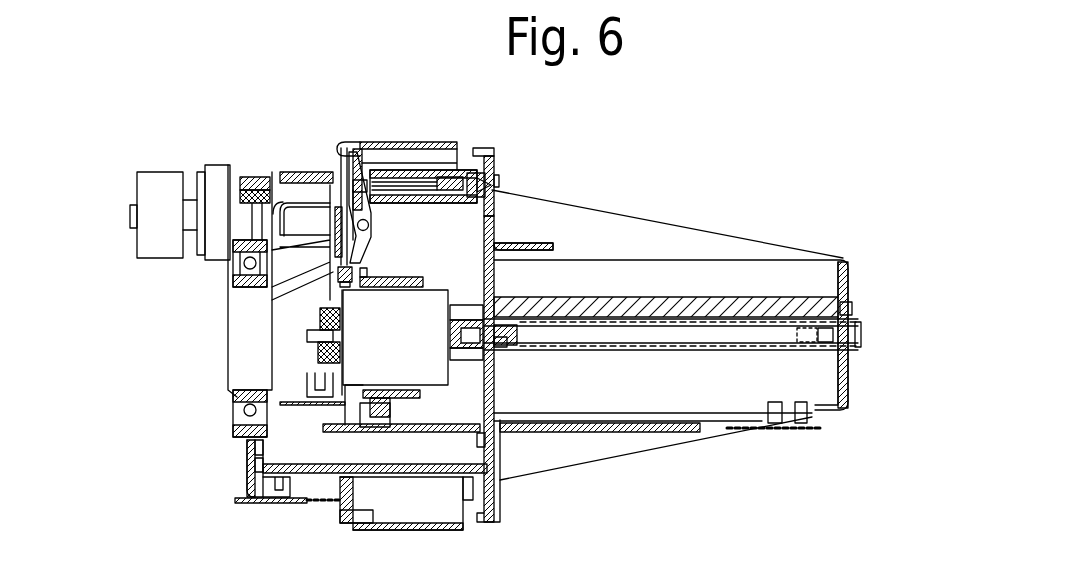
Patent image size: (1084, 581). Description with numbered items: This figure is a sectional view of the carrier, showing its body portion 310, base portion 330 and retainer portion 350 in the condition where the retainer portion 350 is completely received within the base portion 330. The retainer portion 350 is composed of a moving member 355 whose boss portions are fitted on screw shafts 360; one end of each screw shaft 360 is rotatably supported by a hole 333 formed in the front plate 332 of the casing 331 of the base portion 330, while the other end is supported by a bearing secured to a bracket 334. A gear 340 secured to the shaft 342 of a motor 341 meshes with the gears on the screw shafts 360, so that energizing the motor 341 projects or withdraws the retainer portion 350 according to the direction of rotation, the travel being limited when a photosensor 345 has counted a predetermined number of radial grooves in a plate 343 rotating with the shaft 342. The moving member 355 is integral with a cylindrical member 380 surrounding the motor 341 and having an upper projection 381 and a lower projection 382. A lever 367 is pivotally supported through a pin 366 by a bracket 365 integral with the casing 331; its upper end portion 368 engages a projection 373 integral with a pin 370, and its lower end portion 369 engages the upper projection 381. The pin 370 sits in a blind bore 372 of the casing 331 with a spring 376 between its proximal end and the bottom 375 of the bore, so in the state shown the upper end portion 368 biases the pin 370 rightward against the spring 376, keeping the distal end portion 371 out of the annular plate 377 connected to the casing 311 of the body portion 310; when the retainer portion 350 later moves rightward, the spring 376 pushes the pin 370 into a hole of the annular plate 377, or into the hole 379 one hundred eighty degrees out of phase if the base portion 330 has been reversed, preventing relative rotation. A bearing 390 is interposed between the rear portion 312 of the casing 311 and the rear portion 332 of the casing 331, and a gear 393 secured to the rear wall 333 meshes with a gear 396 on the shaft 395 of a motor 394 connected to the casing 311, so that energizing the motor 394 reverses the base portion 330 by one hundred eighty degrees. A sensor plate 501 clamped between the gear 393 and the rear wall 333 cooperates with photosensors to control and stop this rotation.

The body portion 310 is at (243, 160).
The casing 311 is at (250, 177).
The rear portion 312 is at (250, 456).
The base portion 330 is at (400, 432).
The casing 331 is at (482, 150).
The front plate 332 is at (237, 395).
The hole 333 is at (253, 471).
The bracket 334 is at (468, 421).
The gear 340 is at (305, 378).
The motor 341 is at (410, 344).
The shaft 342 is at (318, 350).
The plate 343 is at (320, 315).
The photosensor 345 is at (323, 406).
The retainer portion 350 is at (505, 333).
The moving member 355 is at (488, 298).
The screw shaft 360 is at (710, 298).
The bracket 365 is at (350, 150).
The pin 366 is at (493, 190).
The lever 367 is at (494, 218).
The upper end portion 368 is at (383, 150).
The lower end portion 369 is at (277, 281).
The pin 370 is at (470, 149).
The distal end portion 371 is at (362, 180).
The blind bore 372 is at (447, 148).
The projection 373 is at (381, 148).
The bottom 375 is at (500, 180).
The spring 376 is at (494, 152).
The annular plate 377 is at (345, 147).
The hole 379 is at (332, 504).
The cylindrical member 380 is at (398, 278).
The upper projection 381 is at (322, 297).
The lower projection 382 is at (425, 412).
The bearing 390 is at (245, 446).
The gear 393 is at (268, 217).
The motor 394 is at (181, 226).
The shaft 395 is at (207, 166).
The gear 396 is at (238, 192).
The sensor plate 501 is at (262, 486).